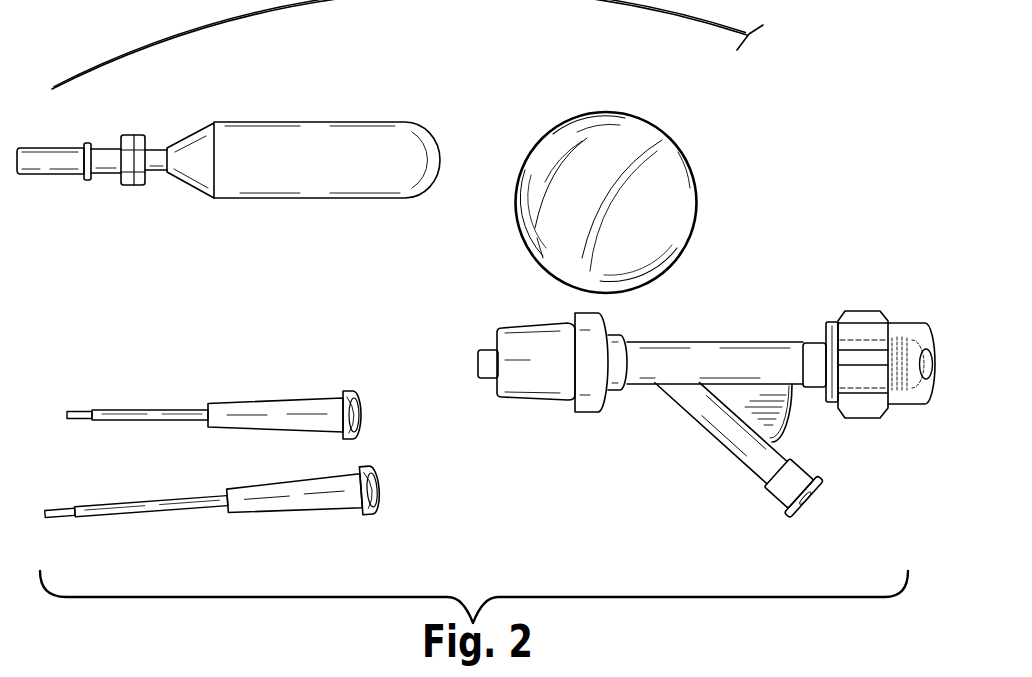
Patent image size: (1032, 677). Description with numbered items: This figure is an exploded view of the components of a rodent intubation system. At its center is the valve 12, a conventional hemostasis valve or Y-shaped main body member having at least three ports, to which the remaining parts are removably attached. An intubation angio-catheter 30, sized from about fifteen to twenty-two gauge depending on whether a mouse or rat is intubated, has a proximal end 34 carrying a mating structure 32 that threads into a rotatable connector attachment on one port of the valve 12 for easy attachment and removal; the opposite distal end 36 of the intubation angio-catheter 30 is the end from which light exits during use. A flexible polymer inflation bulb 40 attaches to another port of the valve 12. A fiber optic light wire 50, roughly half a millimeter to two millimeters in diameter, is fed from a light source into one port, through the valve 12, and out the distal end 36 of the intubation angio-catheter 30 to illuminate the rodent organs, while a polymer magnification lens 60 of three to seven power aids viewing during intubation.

The valve 12 is at (638, 413).
The intubation angio-catheter 30 is at (257, 453).
The mating structure 32 is at (368, 415).
The proximal end 34 is at (334, 395).
The distal end 36 is at (98, 505).
The flexible polymer inflation bulb 40 is at (213, 217).
The fiber optic light wire 50 is at (190, 37).
The polymer magnification lens 60 is at (705, 165).